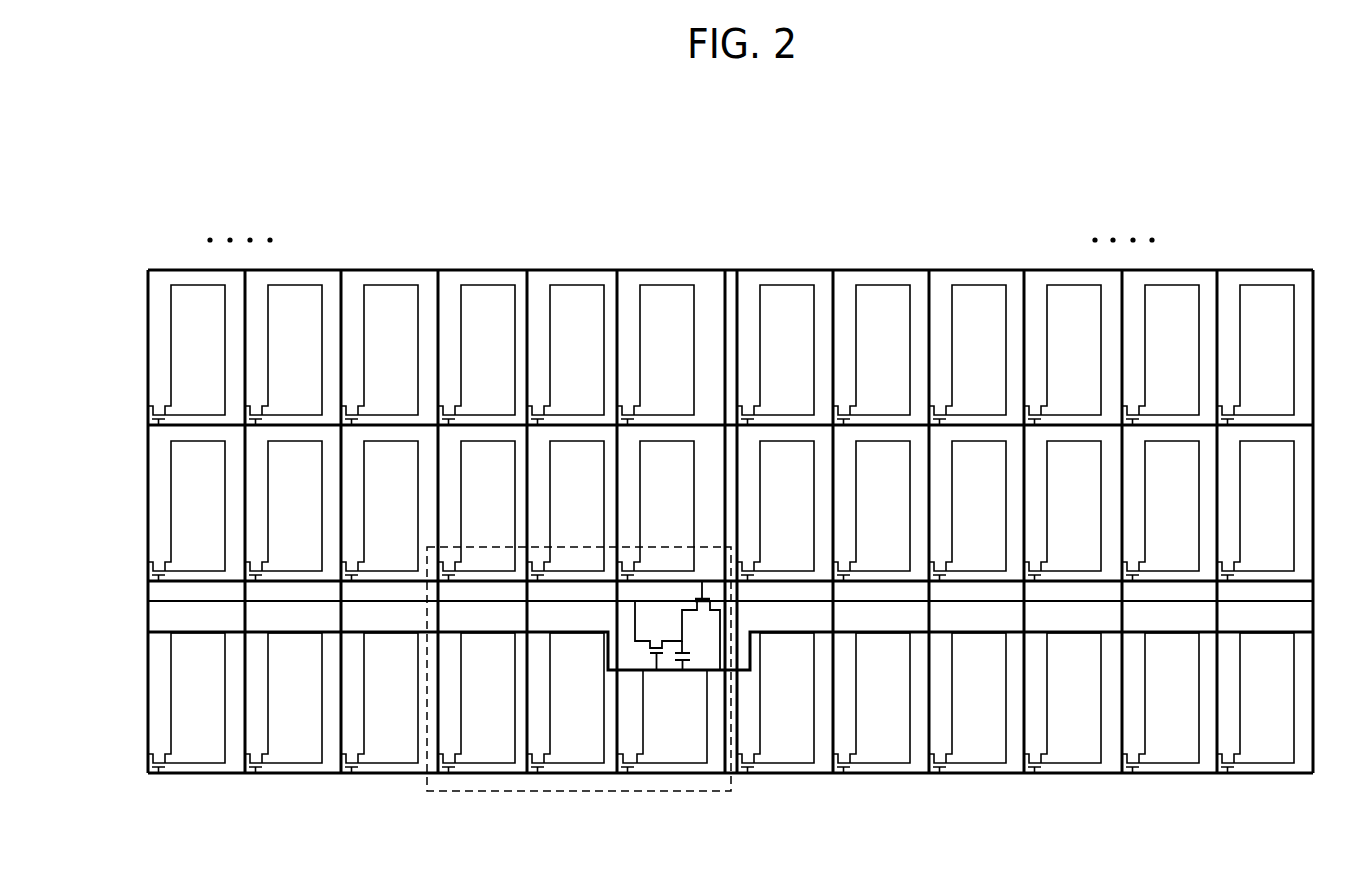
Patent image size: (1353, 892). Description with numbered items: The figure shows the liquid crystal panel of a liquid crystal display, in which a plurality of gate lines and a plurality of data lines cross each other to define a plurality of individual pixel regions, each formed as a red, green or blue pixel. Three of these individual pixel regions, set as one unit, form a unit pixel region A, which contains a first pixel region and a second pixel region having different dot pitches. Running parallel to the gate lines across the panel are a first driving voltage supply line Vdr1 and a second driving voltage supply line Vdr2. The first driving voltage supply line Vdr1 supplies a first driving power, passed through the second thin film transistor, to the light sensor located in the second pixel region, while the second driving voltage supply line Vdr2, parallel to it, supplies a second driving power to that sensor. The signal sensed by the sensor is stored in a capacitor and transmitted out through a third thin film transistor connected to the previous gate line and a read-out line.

The first driving voltage supply line Vdr1 is at (700, 646).
The second driving voltage supply line Vdr2 is at (700, 602).
The unit pixel region A is at (579, 811).